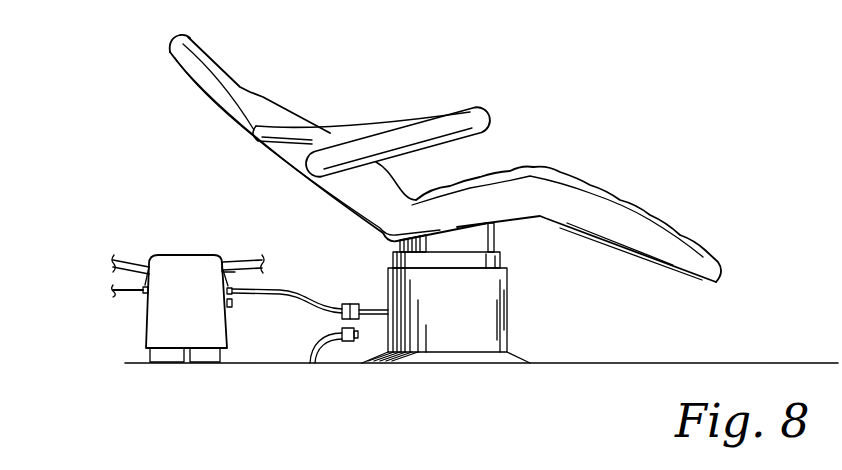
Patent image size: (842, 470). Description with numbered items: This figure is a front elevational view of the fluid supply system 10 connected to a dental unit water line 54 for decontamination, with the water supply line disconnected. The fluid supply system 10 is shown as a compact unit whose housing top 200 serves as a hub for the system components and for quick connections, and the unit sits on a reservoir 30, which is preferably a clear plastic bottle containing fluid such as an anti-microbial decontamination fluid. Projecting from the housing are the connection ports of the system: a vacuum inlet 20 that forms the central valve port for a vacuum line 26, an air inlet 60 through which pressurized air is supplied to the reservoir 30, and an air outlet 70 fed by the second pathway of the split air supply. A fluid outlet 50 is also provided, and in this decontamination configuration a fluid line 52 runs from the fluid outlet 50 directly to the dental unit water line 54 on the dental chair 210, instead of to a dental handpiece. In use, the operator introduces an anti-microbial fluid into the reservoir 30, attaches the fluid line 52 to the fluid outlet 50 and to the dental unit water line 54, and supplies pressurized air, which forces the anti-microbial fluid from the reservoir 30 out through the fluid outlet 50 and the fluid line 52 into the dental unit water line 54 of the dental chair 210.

The fluid supply system 10 is at (215, 278).
The vacuum inlet 20 is at (182, 263).
The housing top 200 is at (192, 282).
The vacuum line 26 is at (127, 259).
The reservoir 30 is at (205, 357).
The fluid outlet 50 is at (234, 270).
The fluid line 52 is at (282, 289).
The dental unit water line 54 is at (378, 318).
The air inlet 60 is at (146, 297).
The air outlet 70 is at (232, 307).
The dental chair 210 is at (549, 139).